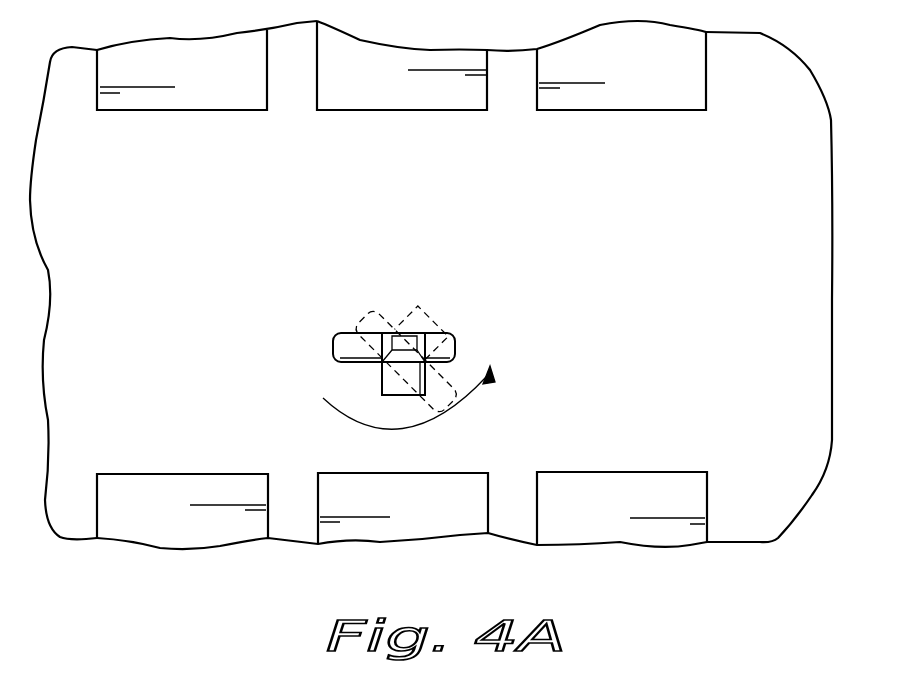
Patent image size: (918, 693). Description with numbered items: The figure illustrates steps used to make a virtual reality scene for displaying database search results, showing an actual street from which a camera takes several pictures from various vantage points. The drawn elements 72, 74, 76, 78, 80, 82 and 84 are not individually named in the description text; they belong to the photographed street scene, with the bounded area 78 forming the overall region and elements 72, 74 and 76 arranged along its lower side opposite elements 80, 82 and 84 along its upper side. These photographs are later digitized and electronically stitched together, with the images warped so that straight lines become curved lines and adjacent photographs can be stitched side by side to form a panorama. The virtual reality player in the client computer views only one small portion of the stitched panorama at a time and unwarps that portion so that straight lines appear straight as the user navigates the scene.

The lower slot 72 is at (183, 472).
The lower slot 74 is at (462, 472).
The lower slot 76 is at (618, 470).
The panel 78 is at (831, 285).
The upper slot 80 is at (628, 112).
The upper slot 82 is at (407, 112).
The upper slot 84 is at (187, 112).